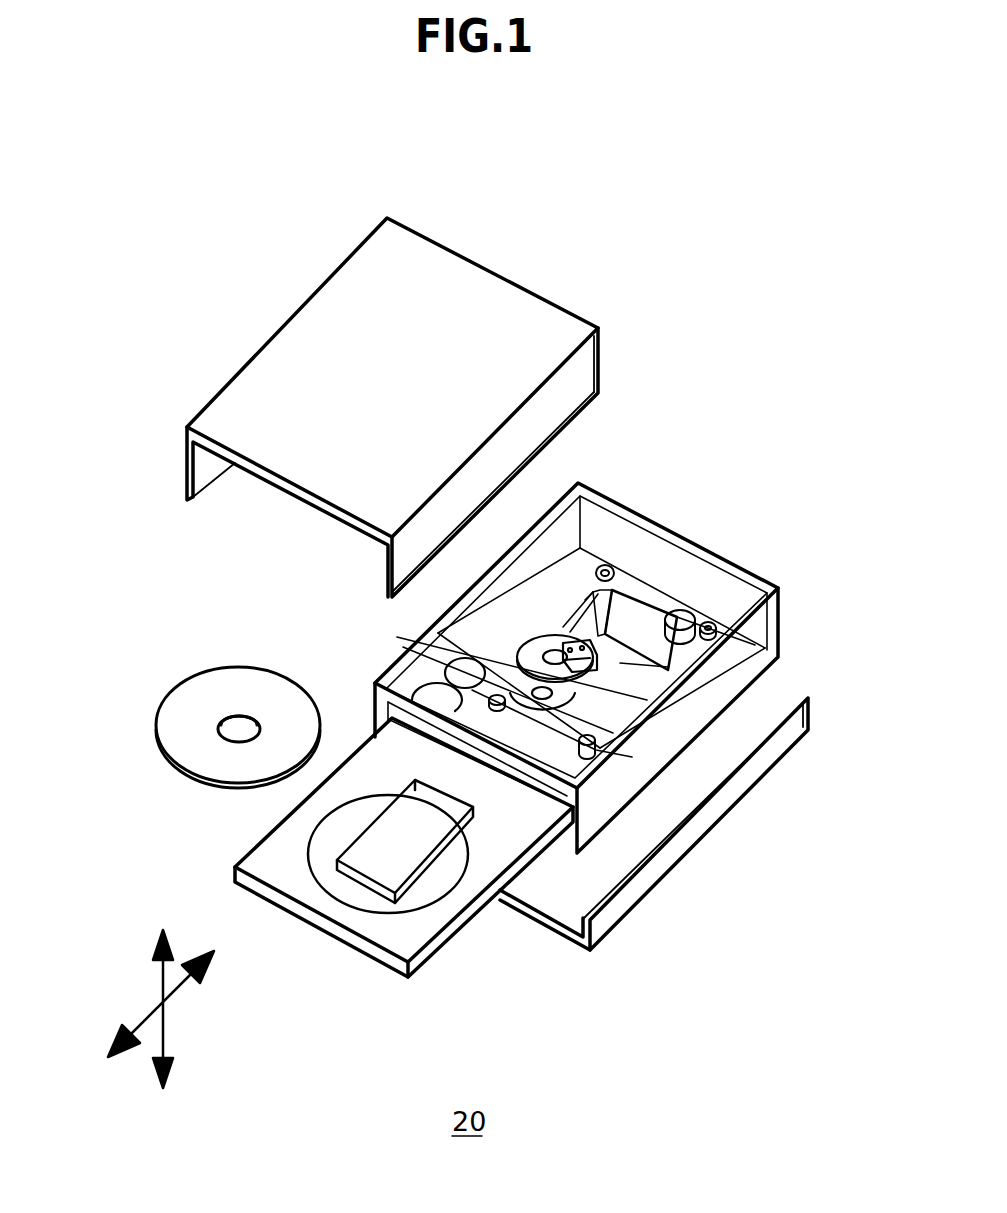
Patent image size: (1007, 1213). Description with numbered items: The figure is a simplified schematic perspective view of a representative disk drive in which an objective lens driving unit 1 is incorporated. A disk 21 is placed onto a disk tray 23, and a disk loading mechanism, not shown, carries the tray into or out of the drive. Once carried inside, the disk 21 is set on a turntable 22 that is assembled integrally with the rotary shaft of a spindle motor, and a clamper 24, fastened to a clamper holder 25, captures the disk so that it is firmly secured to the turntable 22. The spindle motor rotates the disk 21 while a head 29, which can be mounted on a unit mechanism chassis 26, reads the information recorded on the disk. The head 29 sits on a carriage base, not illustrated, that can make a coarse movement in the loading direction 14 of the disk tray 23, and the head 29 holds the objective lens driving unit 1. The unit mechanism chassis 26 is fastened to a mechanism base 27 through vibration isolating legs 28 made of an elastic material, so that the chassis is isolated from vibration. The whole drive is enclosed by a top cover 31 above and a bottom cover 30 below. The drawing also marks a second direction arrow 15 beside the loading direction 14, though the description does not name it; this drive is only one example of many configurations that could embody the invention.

The objective lens driving unit 1 is at (613, 608).
The loading direction 14 is at (181, 987).
The pickup moving direction 15 is at (164, 992).
The disk 21 is at (200, 706).
The turntable 22 is at (545, 700).
The disk tray 23 is at (420, 925).
The clamper 24 is at (445, 655).
The clamper holder 25 is at (628, 705).
The unit mechanism chassis 26 is at (658, 658).
The mechanism base 27 is at (710, 573).
The vibration isolating legs 28 is at (497, 695).
The head 29 is at (583, 648).
The bottom cover 30 is at (735, 790).
The top cover 31 is at (580, 378).